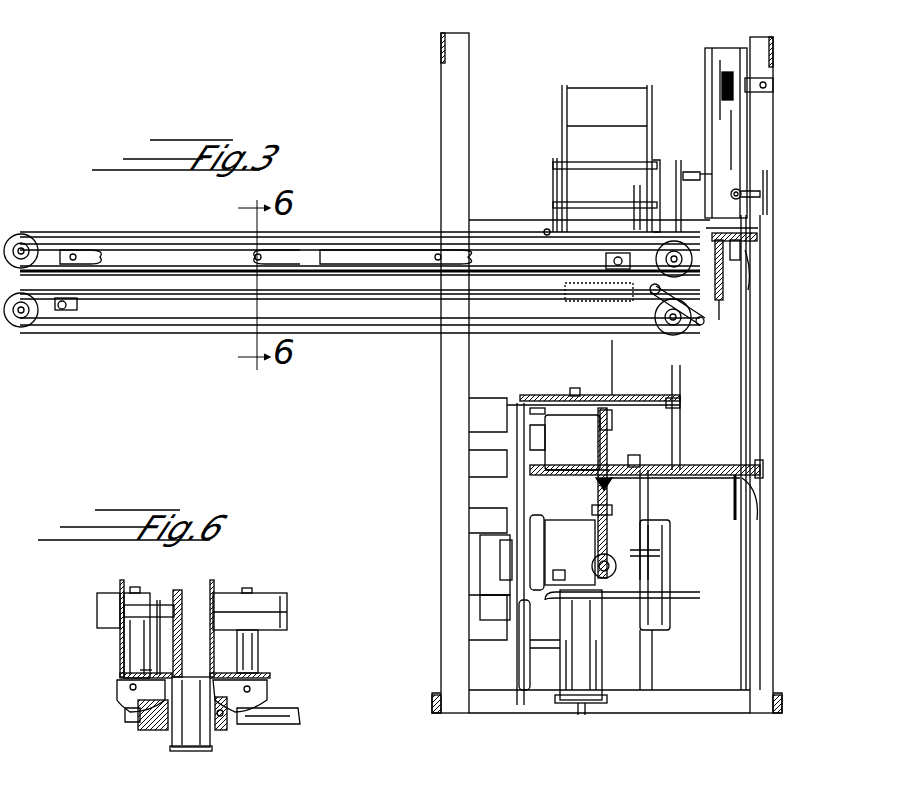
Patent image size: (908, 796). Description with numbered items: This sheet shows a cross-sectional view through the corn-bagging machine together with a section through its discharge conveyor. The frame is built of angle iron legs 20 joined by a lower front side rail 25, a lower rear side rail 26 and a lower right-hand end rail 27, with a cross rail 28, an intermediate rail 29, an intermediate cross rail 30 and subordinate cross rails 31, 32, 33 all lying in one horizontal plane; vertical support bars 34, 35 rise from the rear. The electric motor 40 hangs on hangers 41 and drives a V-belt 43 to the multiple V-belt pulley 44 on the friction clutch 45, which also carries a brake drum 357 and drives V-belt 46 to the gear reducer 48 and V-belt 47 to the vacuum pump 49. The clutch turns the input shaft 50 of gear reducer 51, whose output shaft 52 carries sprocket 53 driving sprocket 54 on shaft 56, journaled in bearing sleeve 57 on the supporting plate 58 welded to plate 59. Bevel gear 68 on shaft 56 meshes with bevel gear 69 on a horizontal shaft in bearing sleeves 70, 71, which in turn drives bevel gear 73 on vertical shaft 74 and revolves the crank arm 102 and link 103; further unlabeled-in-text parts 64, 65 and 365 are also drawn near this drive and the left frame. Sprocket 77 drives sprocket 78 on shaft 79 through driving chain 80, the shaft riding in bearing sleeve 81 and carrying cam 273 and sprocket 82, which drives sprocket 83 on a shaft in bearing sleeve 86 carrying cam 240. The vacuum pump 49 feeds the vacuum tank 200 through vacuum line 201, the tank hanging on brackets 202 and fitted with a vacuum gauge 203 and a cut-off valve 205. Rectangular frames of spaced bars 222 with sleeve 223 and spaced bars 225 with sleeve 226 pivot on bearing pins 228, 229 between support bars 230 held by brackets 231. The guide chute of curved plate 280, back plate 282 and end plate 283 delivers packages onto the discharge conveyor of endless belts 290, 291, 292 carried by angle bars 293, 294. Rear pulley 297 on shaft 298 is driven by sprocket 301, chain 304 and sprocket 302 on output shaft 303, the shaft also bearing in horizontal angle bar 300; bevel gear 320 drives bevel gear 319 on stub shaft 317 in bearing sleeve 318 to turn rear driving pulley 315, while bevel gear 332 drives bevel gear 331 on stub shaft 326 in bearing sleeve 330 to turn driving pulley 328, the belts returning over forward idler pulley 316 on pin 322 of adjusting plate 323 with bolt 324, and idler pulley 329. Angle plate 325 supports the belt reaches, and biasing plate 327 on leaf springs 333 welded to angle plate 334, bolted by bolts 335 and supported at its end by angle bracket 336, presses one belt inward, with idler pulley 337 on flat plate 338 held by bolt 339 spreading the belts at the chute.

In FIG. 3, the legs 20 is at (450, 33).
In FIG. 3, the lower front side rail 25 is at (447, 378).
In FIG. 3, the lower rear side rail 26 is at (750, 655).
In FIG. 3, the lower right-hand end rail 27 is at (644, 690).
In FIG. 3, the cross rail 28 is at (473, 220).
In FIG. 3, the intermediate rail 29 is at (612, 351).
In FIG. 3, the intermediate cross rail 30 is at (469, 462).
In FIG. 3, the subordinate cross rail 31 is at (469, 420).
In FIG. 3, the subordinate cross rail 32 is at (469, 518).
In FIG. 3, the subordinate cross rail 33 is at (469, 620).
In FIG. 3, the vertical support bar 34 is at (735, 505).
In FIG. 3, the vertical support bar 35 is at (728, 270).
In FIG. 3, the electric motor 40 is at (662, 618).
In FIG. 3, the hangers 41 is at (647, 673).
In FIG. 3, the V-belt 43 is at (500, 600).
In FIG. 3, the multiple V-belt pulley 44 is at (500, 545).
In FIG. 3, the friction clutch 45 is at (530, 520).
In FIG. 3, the V-belt 46 is at (517, 494).
In FIG. 3, the V-belt 47 is at (519, 645).
In FIG. 3, the gear reducer 48 is at (565, 442).
In FIG. 3, the vacuum pump 49 is at (560, 710).
In FIG. 3, the input shaft 50 is at (553, 573).
In FIG. 3, the gear reducer 51 is at (572, 547).
In FIG. 3, the output shaft 52 is at (613, 560).
In FIG. 3, the sprocket 53 is at (655, 550).
In FIG. 3, the sprocket 54 is at (640, 460).
In FIG. 3, the shaft 56 is at (752, 462).
In FIG. 3, the bearing sleeve 57 is at (710, 478).
In FIG. 3, the supporting plate 58 is at (648, 480).
In FIG. 3, the plate 59 is at (598, 458).
In FIG. 3, the screw shaft 64 is at (602, 498).
In FIG. 3, the rod 65 is at (648, 497).
In FIG. 3, the bevel gear 68 is at (632, 460).
In FIG. 3, the bevel gear 69 is at (598, 490).
In FIG. 3, the bearing sleeve 70 is at (612, 425).
In FIG. 3, the bearing sleeve 71 is at (607, 518).
In FIG. 3, the bevel gear 73 is at (628, 600).
In FIG. 3, the vertical shaft 74 is at (610, 572).
In FIG. 3, the sprocket 77 is at (752, 520).
In FIG. 3, the sprocket 78 is at (760, 302).
In FIG. 3, the shaft 79 is at (733, 255).
In FIG. 3, the driving chain 80 is at (760, 363).
In FIG. 3, the bearing sleeve 81 is at (735, 233).
In FIG. 3, the sprocket 82 is at (748, 288).
In FIG. 3, the sprocket 83 is at (765, 172).
In FIG. 3, the bearing sleeve 86 is at (676, 215).
In FIG. 3, the crank arm 102 is at (625, 395).
In FIG. 3, the link 103 is at (517, 406).
In FIG. 3, the vacuum tank 200 is at (706, 69).
In FIG. 3, the vacuum line 201 is at (700, 174).
In FIG. 3, the brackets 202 is at (755, 78).
In FIG. 3, the vacuum gauge 203 is at (722, 93).
In FIG. 3, the cut-off valve 205 is at (731, 194).
In FIG. 3, the spaced bars 222 is at (646, 88).
In FIG. 3, the sleeve 223 is at (622, 162).
In FIG. 3, the spaced bars 225 is at (646, 126).
In FIG. 3, the sleeve 226 is at (605, 202).
In FIG. 3, the bearing pin 228 is at (553, 165).
In FIG. 3, the bearing pin 229 is at (556, 200).
In FIG. 3, the support bars 230 is at (657, 165).
In FIG. 3, the brackets 231 is at (544, 229).
In FIG. 3, the cam 240 is at (637, 188).
In FIG. 3, the cam 273 is at (733, 313).
In FIG. 3, the curved plate 280 is at (590, 280).
In FIG. 3, the back plate 282 is at (599, 292).
In FIG. 3, the end plate 283 is at (568, 306).
In FIG. 3, the endless belt 290 is at (184, 290).
In FIG. 6, the endless belt 290 is at (178, 752).
In FIG. 3, the endless belt 291 is at (120, 333).
In FIG. 6, the endless belt 291 is at (287, 620).
In FIG. 3, the endless belt 292 is at (182, 232).
In FIG. 6, the endless belt 292 is at (97, 618).
In FIG. 3, the angle bar 293 is at (335, 322).
In FIG. 6, the angle bar 293 is at (262, 677).
In FIG. 6, the angle bar 294 is at (120, 677).
In FIG. 6, the rear pulley 297 is at (175, 742).
In FIG. 3, the shaft 298 is at (680, 382).
In FIG. 6, the shaft 298 is at (270, 725).
In FIG. 3, the horizontal angle bar 300 is at (692, 462).
In FIG. 3, the sprocket 301 is at (680, 404).
In FIG. 3, the sprocket 302 is at (555, 396).
In FIG. 3, the output shaft 303 is at (574, 388).
In FIG. 3, the chain 304 is at (620, 395).
In FIG. 3, the rear driving pulley 315 is at (684, 330).
In FIG. 6, the rear driving pulley 315 is at (268, 595).
In FIG. 3, the forward idler pulley 316 is at (36, 320).
In FIG. 6, the stub shaft 317 is at (247, 588).
In FIG. 6, the bearing sleeve 318 is at (250, 648).
In FIG. 6, the bevel gear 319 is at (265, 696).
In FIG. 6, the bevel gear 320 is at (224, 730).
In FIG. 3, the pin 322 is at (27, 247).
In FIG. 3, the adjusting plate 323 is at (77, 307).
In FIG. 3, the bolt 324 is at (60, 300).
In FIG. 3, the angle plate 325 is at (404, 294).
In FIG. 6, the angle plate 325 is at (212, 580).
In FIG. 6, the stub shaft 326 is at (134, 587).
In FIG. 3, the biasing plate 327 is at (358, 270).
In FIG. 6, the biasing plate 327 is at (170, 630).
In FIG. 3, the driving pulley 328 is at (655, 229).
In FIG. 6, the driving pulley 328 is at (113, 598).
In FIG. 3, the idler pulley 329 is at (12, 240).
In FIG. 6, the bearing sleeve 330 is at (128, 650).
In FIG. 6, the bevel gear 331 is at (118, 692).
In FIG. 6, the bevel gear 332 is at (150, 728).
In FIG. 3, the leaf springs 333 is at (102, 256).
In FIG. 6, the leaf springs 333 is at (130, 601).
In FIG. 3, the angle plate 334 is at (368, 240).
In FIG. 6, the angle plate 334 is at (122, 580).
In FIG. 3, the bolts 335 is at (255, 257).
In FIG. 6, the bolts 335 is at (140, 664).
In FIG. 3, the angle bracket 336 is at (606, 260).
In FIG. 6, the angle bracket 336 is at (160, 660).
In FIG. 3, the idler pulley 337 is at (620, 300).
In FIG. 3, the flat plate 338 is at (652, 296).
In FIG. 3, the bolt 339 is at (703, 318).
In FIG. 3, the brake drum 357 is at (556, 531).
In FIG. 3, the bracket 365 is at (483, 550).